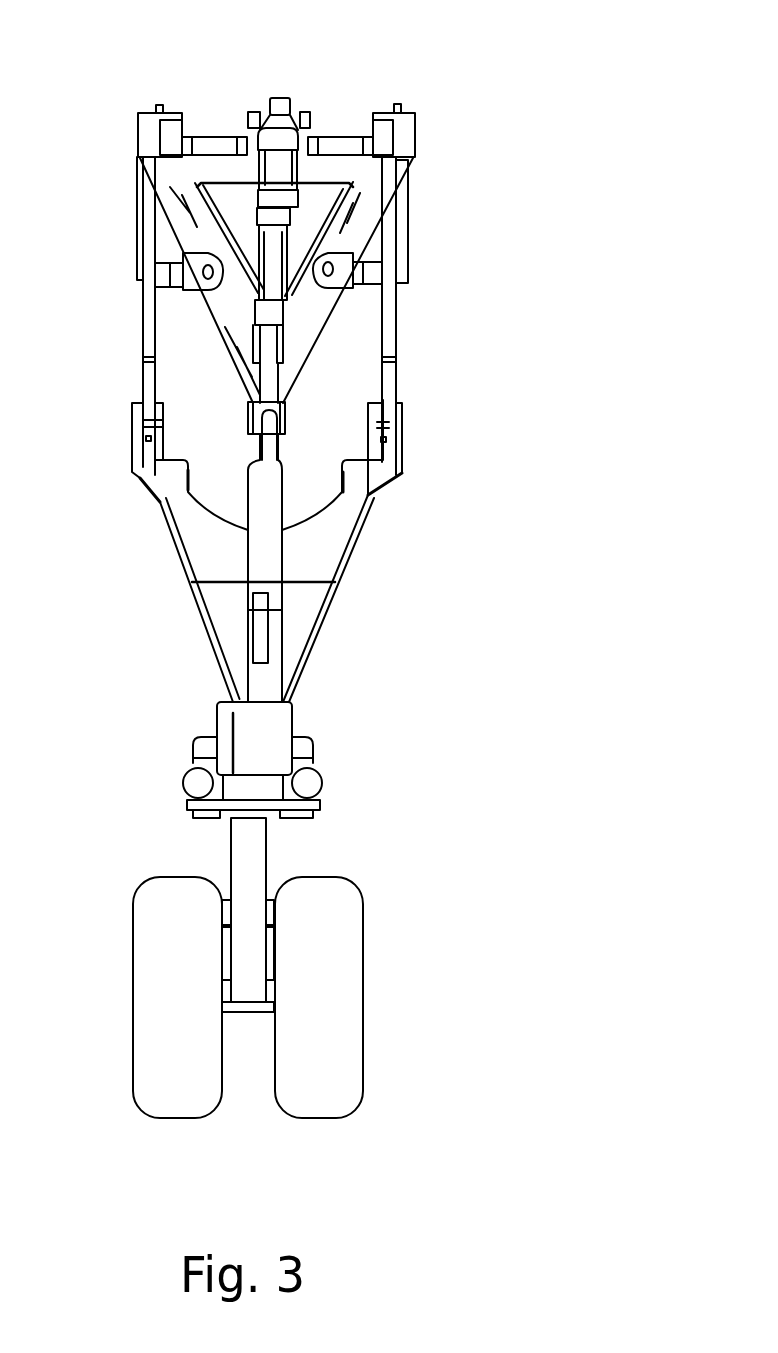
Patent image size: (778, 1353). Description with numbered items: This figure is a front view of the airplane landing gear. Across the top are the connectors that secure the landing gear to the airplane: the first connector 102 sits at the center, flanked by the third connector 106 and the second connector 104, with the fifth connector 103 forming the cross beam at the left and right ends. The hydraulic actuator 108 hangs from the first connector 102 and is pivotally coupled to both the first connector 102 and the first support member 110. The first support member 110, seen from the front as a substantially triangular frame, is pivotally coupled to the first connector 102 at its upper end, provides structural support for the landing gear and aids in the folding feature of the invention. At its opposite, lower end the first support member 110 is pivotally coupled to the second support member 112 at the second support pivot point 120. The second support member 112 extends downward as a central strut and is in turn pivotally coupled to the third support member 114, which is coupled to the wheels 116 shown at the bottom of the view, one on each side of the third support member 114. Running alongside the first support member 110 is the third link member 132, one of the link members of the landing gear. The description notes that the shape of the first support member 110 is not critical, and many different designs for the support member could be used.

The first connector 102 is at (282, 123).
The fifth connector 103 is at (147, 137).
The second connector 104 is at (398, 107).
The third connector 106 is at (158, 108).
The hydraulic actuator 108 is at (287, 170).
The first support member 110 is at (380, 175).
The second support member 112 is at (255, 502).
The third support member 114 is at (267, 845).
The wheels 116 is at (343, 983).
The second support pivot point 120 is at (252, 422).
The third link member 132 is at (393, 320).